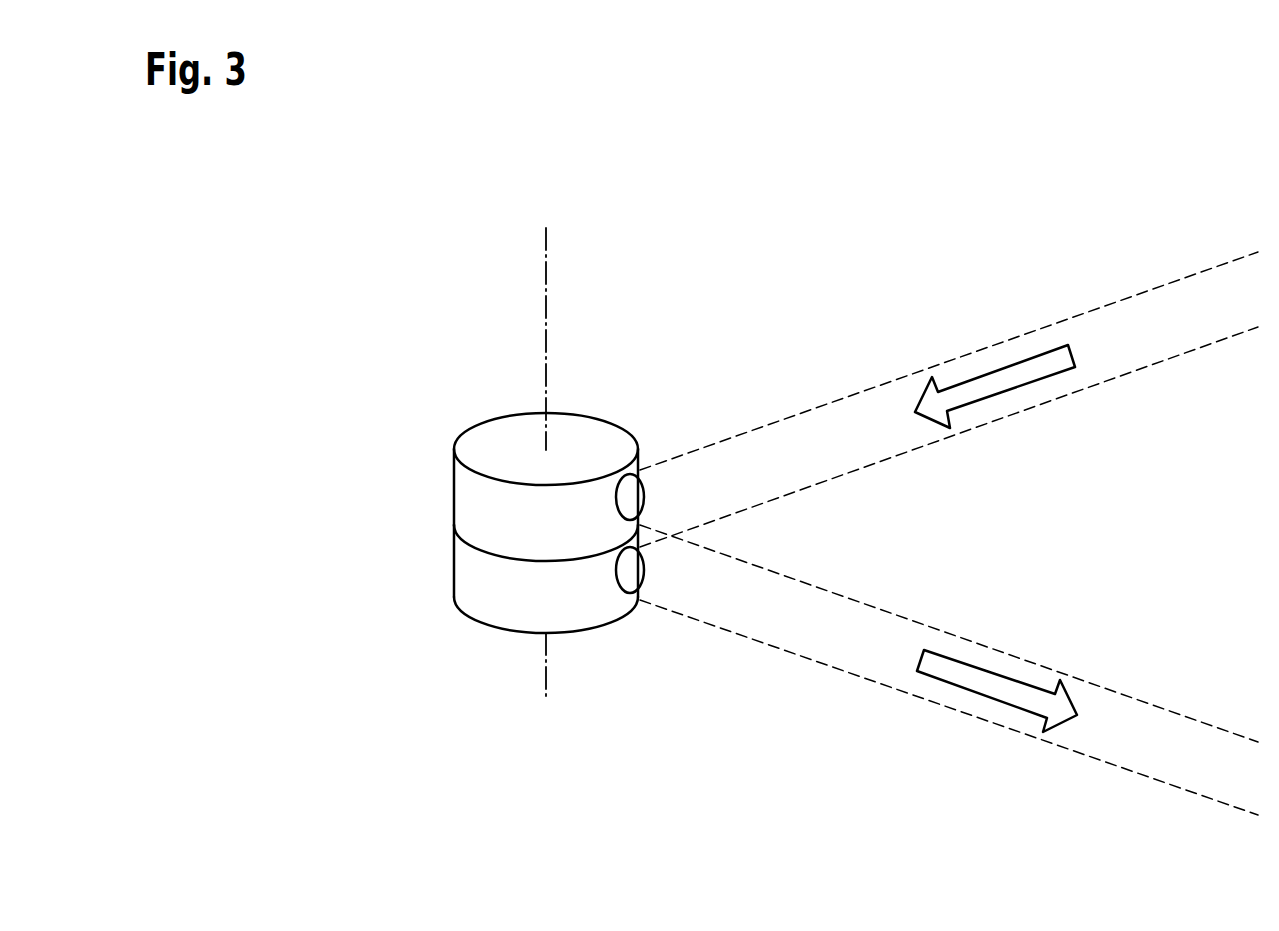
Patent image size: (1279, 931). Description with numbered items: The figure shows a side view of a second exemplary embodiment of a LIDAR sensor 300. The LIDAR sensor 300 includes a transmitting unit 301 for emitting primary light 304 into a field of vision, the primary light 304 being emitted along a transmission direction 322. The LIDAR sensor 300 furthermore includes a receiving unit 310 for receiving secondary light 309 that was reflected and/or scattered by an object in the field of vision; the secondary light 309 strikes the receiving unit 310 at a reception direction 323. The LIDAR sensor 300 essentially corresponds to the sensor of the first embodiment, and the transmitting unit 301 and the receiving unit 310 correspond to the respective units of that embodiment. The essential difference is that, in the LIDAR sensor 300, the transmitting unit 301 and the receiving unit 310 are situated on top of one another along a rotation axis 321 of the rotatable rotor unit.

The LIDAR sensor 300 is at (378, 279).
The rotation axis 321 is at (546, 279).
The receiving unit 310 is at (454, 487).
The transmitting unit 301 is at (454, 588).
The secondary light 309 is at (966, 355).
The reception direction 323 is at (968, 408).
The transmission direction 322 is at (966, 665).
The primary light 304 is at (965, 713).